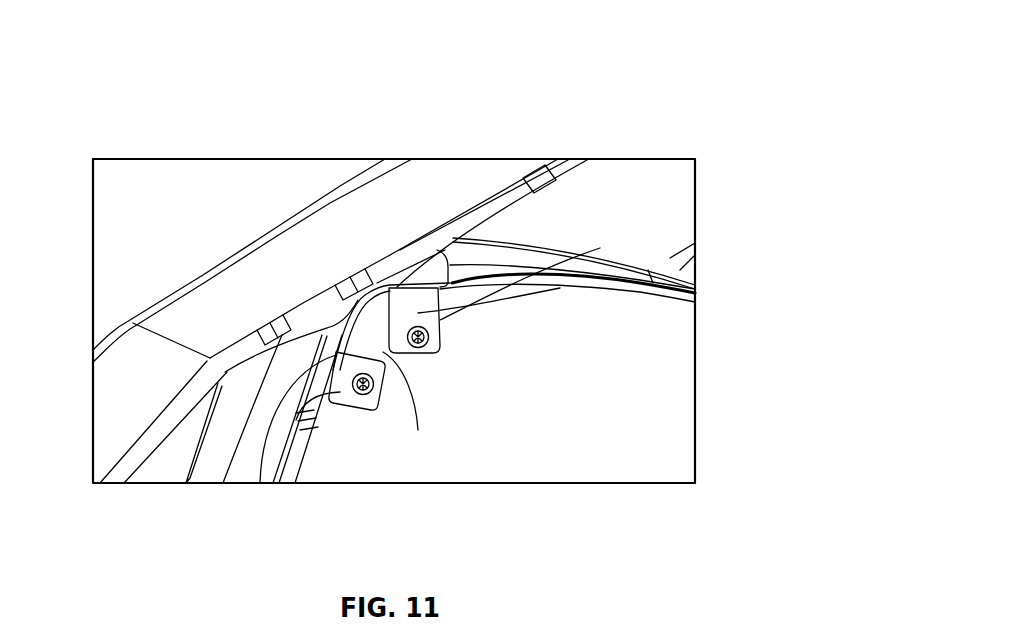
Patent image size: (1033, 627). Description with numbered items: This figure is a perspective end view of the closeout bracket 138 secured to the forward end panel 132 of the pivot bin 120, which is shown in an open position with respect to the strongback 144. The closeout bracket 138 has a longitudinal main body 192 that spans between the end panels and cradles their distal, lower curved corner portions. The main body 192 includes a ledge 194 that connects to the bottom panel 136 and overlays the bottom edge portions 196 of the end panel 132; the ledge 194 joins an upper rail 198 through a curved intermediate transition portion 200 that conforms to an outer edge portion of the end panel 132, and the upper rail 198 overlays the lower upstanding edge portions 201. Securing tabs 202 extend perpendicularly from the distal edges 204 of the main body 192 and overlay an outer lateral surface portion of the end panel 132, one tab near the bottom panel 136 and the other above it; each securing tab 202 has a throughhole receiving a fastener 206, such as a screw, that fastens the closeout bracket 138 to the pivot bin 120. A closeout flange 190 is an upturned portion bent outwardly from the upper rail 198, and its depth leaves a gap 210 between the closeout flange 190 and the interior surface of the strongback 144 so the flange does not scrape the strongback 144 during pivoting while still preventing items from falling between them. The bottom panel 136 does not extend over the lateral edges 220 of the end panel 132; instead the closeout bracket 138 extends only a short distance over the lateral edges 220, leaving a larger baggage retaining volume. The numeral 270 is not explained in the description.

The pivot bin 120 is at (645, 486).
The forward end panel 132 is at (525, 432).
The bottom panel 136 is at (254, 443).
The closeout bracket 138 is at (412, 284).
The strongback 144 is at (301, 195).
The closeout flange 190 is at (483, 243).
The main body 192 is at (203, 278).
The ledge 194 is at (184, 484).
The bottom edge portions 196 is at (420, 352).
The upper rail 198 is at (408, 283).
The curved intermediate transition portion 200 is at (322, 237).
The lower upstanding edge portions 201 is at (498, 268).
The securing tabs 202 is at (576, 253).
The distal edges 204 is at (373, 287).
The fastener 206 is at (363, 393).
The gap 210 is at (428, 245).
The lateral edges 220 is at (575, 252).
The trim 270 is at (585, 272).